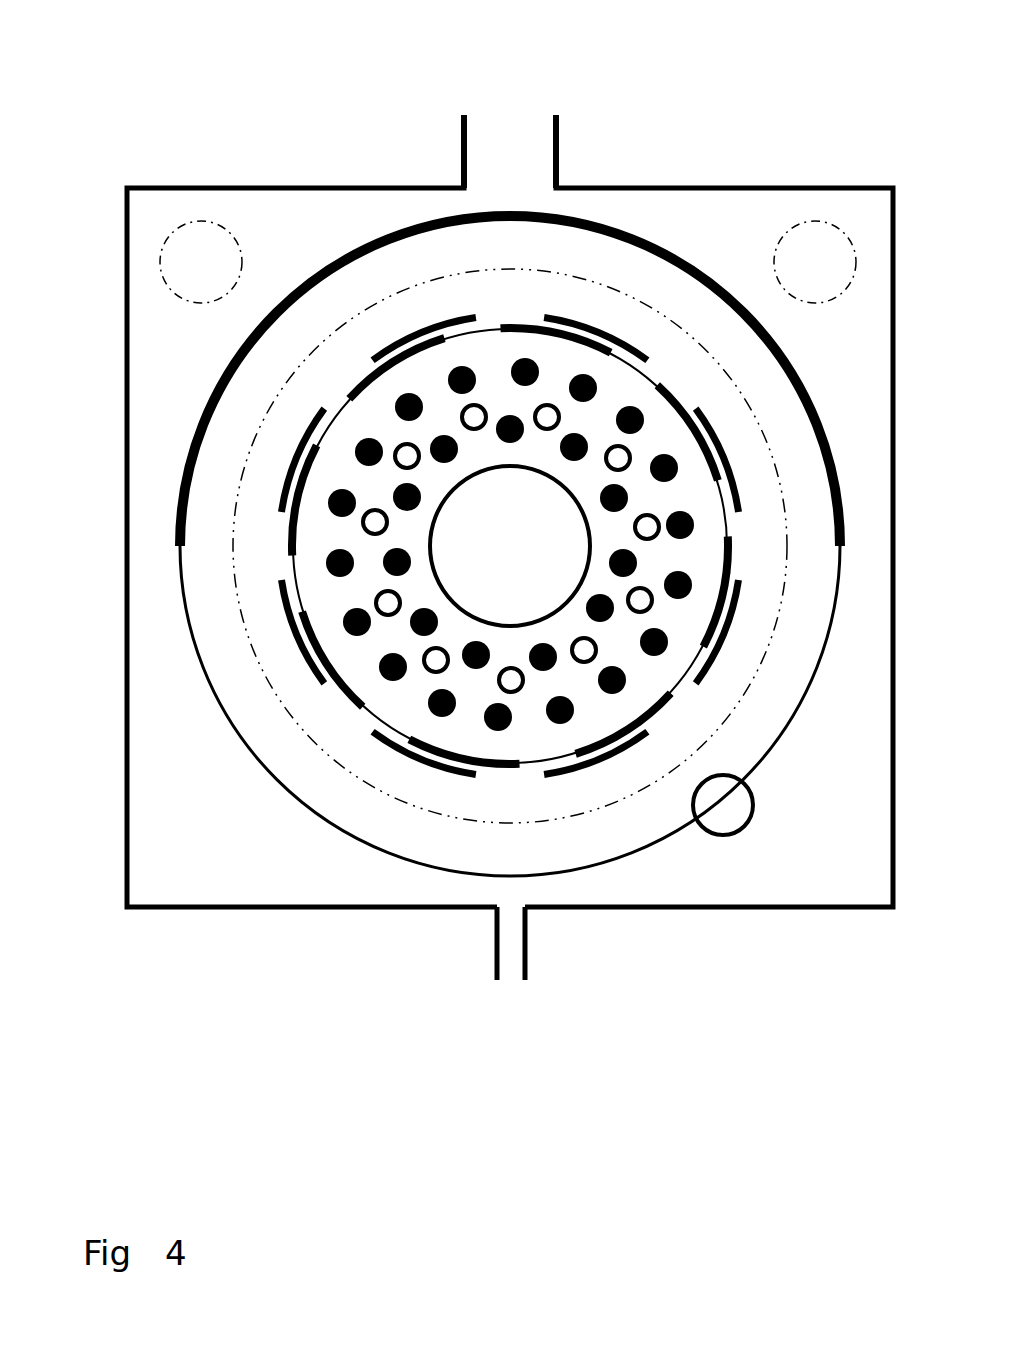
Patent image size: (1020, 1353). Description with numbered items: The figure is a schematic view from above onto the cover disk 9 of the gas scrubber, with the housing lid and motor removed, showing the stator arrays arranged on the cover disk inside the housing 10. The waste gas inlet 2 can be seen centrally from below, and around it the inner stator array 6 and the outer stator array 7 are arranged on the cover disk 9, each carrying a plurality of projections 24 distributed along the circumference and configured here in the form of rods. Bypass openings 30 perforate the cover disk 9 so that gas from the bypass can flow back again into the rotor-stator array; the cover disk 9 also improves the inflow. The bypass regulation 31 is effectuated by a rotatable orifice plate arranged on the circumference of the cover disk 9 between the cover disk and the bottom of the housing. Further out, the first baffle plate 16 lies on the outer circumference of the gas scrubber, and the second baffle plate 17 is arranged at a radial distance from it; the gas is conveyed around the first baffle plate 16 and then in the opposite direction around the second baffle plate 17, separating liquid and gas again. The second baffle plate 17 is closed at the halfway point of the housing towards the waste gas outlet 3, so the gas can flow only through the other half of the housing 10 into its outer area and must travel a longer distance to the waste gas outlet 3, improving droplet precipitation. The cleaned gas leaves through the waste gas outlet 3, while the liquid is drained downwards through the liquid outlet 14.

The waste gas inlet 2 is at (473, 520).
The waste gas outlet 3 is at (493, 117).
The inner stator array 6 is at (424, 622).
The outer stator array 7 is at (442, 703).
The cover disk 9 is at (626, 378).
The housing 10 is at (427, 910).
The liquid outlet 14 is at (728, 810).
The first baffle plate 16 is at (388, 798).
The second baffle plate 17 is at (667, 250).
The projections 24 is at (250, 790).
The bypass openings 30 is at (375, 522).
The bypass regulation 31 is at (483, 773).